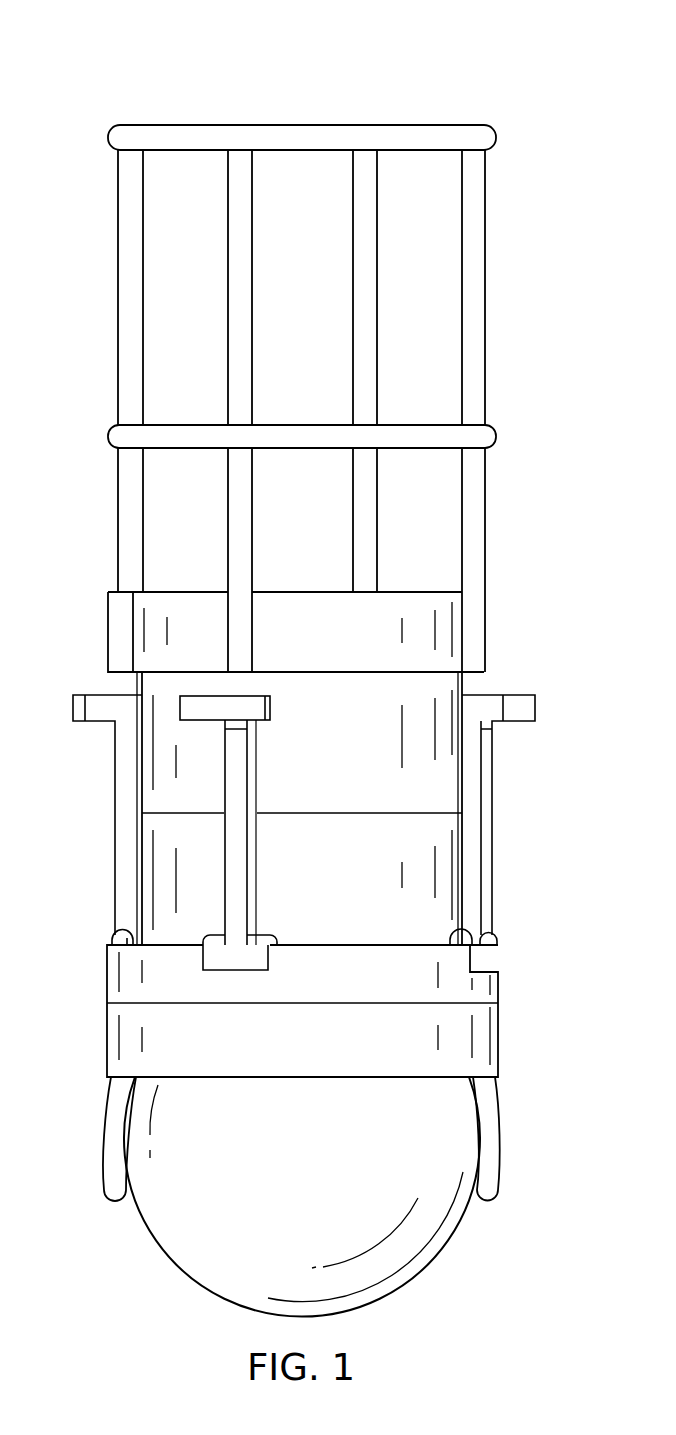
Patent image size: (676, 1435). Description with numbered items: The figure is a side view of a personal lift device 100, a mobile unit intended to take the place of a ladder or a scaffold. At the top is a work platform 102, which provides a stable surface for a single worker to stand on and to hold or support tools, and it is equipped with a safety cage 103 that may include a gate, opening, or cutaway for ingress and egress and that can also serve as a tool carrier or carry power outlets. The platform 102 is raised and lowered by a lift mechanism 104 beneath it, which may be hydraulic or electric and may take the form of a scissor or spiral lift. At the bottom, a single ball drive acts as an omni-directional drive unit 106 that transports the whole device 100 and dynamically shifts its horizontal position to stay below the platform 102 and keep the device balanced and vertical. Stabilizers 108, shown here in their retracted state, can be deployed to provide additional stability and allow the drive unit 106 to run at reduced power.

The personal lift device 100 is at (488, 68).
The work platform 102 is at (492, 633).
The safety cage 103 is at (485, 288).
The lift mechanism 104 is at (445, 775).
The omni-directional drive unit 106 is at (503, 1150).
The stabilizers 108 is at (128, 821).